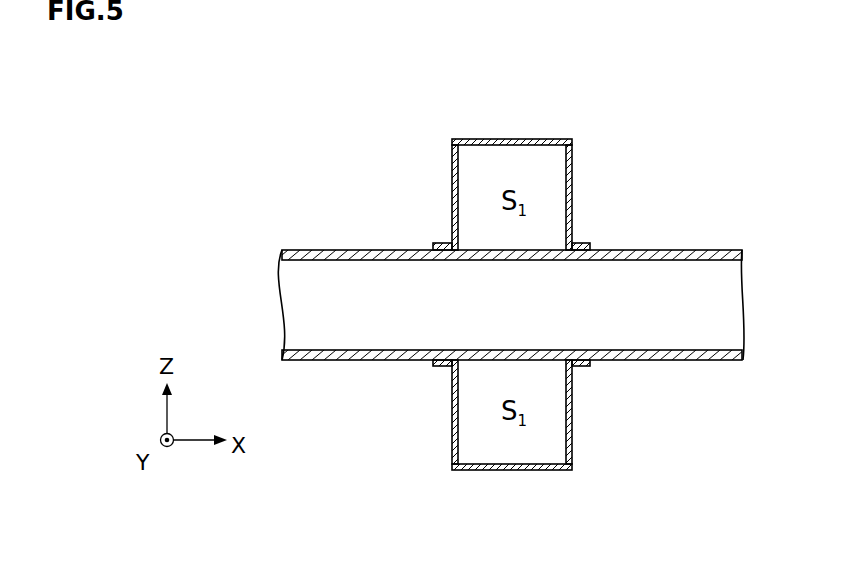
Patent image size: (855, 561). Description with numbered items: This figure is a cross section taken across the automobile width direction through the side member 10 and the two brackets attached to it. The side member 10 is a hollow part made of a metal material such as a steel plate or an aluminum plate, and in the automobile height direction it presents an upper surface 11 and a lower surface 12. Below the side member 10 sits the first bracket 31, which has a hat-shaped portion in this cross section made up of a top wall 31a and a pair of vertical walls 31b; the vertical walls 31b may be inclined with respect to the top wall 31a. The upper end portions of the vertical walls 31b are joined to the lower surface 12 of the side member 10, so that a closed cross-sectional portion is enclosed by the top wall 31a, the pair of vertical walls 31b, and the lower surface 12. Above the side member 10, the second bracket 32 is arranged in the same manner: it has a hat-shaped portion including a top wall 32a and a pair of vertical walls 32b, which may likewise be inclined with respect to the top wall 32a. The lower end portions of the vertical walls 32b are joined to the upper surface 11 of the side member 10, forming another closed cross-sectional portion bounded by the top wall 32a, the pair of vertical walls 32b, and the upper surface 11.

The side member 10 is at (511, 303).
The upper surface 11 is at (683, 250).
The lower surface 12 is at (683, 360).
The first bracket 31 is at (517, 451).
The top wall 31a is at (512, 470).
The vertical walls 31b is at (452, 413).
The second bracket 32 is at (517, 164).
The top wall 32a is at (512, 139).
The vertical walls 32b is at (452, 195).